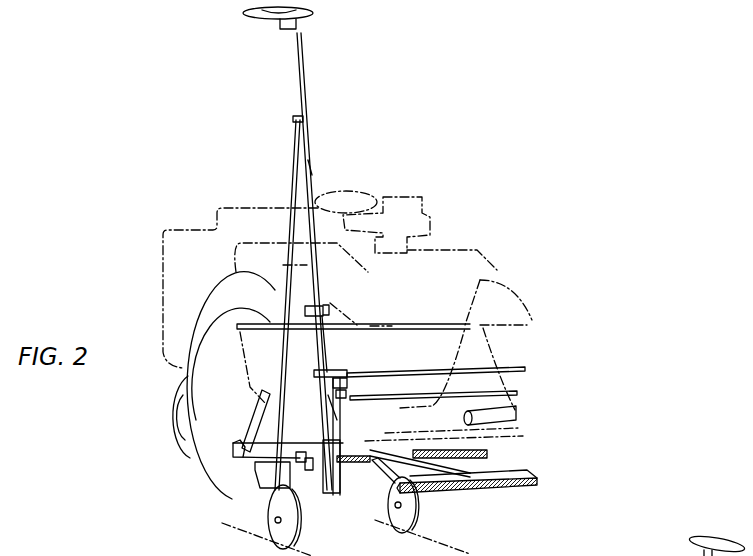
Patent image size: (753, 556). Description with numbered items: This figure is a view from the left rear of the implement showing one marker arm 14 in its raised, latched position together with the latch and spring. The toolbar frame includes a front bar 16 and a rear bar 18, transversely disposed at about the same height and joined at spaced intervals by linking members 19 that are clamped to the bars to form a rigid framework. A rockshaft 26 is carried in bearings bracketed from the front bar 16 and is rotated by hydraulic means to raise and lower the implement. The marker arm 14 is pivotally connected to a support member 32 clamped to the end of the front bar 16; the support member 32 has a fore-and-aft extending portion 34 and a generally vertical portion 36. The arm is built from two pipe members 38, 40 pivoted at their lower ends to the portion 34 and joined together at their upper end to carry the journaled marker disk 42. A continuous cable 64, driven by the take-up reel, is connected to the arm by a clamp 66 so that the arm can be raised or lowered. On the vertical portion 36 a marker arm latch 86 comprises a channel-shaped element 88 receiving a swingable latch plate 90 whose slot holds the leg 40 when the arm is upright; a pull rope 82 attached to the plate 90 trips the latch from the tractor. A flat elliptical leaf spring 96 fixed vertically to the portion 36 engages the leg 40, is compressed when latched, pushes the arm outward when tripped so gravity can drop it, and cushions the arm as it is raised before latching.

The marker arm 14 is at (305, 137).
The front bar 16 is at (414, 449).
The rear bar 18 is at (488, 485).
The linking members 19 is at (427, 470).
The rockshaft 26 is at (463, 417).
The support member 32 is at (309, 492).
The fore-and-aft extending portion 34 is at (293, 480).
The generally vertical portion 36 is at (341, 410).
The pipe member 38 is at (290, 220).
The pipe member 40 is at (313, 167).
The marker disk 42 is at (313, 15).
The cable 64 is at (510, 398).
The clamps 66 is at (340, 305).
The pull rope 82 is at (466, 372).
The marker arm latch 86 is at (347, 379).
The channel-shaped element 88 is at (333, 372).
The latch plate 90 is at (317, 377).
The leaf spring 96 is at (337, 415).